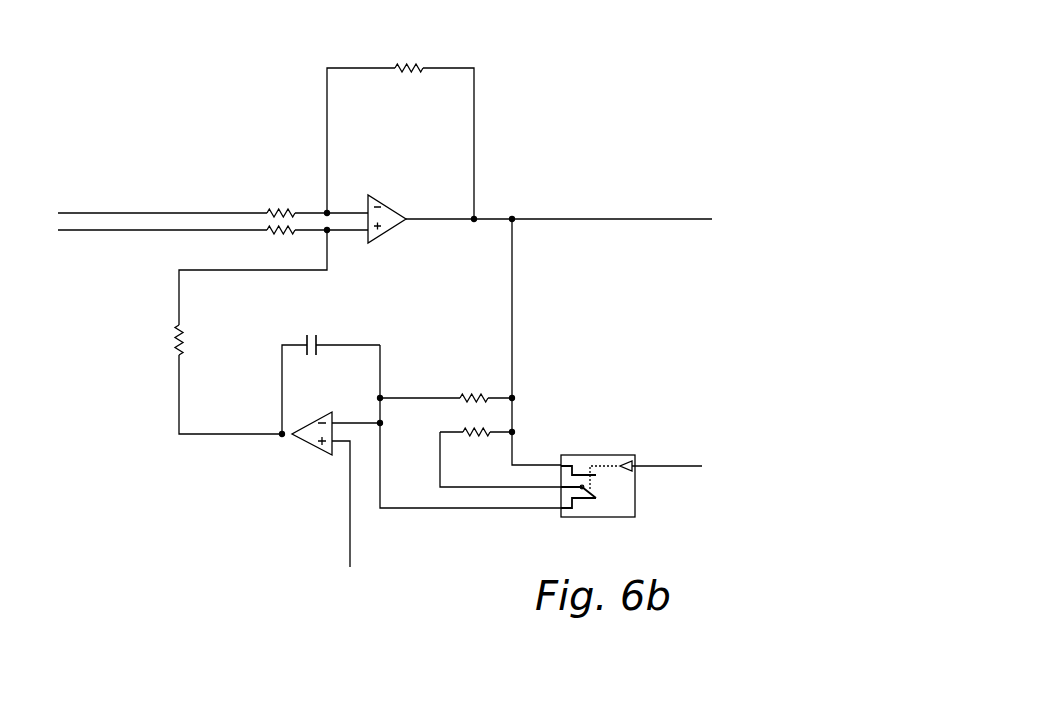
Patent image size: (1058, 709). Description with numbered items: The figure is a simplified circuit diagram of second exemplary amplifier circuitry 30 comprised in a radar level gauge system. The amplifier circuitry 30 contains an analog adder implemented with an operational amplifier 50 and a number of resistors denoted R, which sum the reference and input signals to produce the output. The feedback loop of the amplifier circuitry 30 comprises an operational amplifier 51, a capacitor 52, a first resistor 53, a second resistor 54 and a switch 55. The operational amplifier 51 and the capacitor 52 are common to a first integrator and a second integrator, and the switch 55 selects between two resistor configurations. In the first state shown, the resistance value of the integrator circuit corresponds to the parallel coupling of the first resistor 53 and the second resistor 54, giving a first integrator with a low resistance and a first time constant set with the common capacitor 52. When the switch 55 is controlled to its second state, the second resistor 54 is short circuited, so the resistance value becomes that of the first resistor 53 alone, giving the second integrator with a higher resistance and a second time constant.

The amplifier circuitry 30 is at (575, 112).
The operational amplifier 50 is at (395, 190).
The operational amplifier 51 is at (313, 463).
The capacitor 52 is at (295, 330).
The first resistor 53 is at (488, 382).
The second resistor 54 is at (493, 443).
The switch 55 is at (613, 452).